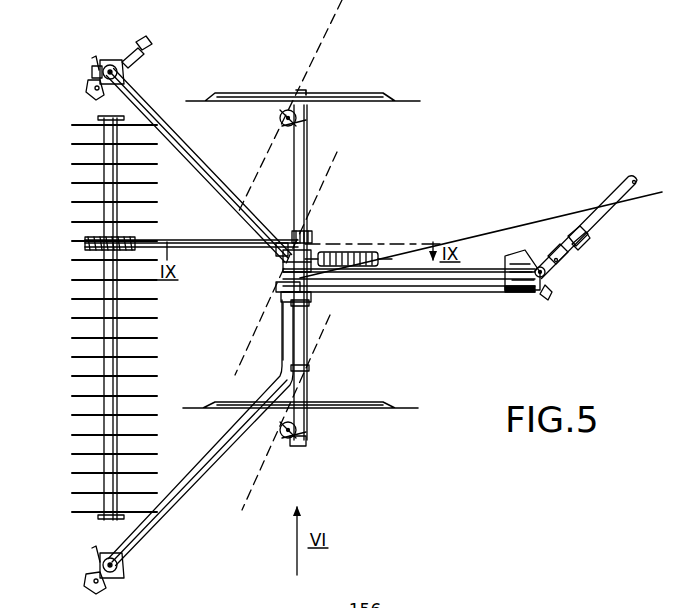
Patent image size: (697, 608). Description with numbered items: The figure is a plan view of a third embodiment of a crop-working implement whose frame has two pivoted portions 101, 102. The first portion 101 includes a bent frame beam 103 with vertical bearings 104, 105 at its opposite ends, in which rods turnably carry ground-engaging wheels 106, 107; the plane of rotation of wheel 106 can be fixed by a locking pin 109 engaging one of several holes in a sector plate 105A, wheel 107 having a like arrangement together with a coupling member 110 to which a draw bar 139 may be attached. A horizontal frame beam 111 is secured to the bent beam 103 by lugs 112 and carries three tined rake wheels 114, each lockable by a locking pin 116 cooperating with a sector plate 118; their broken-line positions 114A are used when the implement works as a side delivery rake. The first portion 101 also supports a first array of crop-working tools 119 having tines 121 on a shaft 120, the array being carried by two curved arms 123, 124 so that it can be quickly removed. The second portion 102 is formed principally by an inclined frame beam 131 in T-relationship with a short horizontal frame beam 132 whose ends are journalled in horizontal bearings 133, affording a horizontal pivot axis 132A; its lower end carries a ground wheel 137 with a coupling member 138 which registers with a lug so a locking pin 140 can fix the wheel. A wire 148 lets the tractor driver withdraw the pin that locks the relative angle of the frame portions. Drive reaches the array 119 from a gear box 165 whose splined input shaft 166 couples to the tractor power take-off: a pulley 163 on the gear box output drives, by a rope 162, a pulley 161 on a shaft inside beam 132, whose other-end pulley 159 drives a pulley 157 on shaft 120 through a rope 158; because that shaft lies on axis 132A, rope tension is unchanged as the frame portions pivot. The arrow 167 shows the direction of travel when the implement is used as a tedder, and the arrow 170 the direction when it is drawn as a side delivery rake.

The frame portion 101 is at (204, 152).
The frame portion 102 is at (483, 252).
The bent frame beam 103 is at (170, 502).
The vertical bearing 104 is at (122, 562).
The vertical bearing 105 is at (122, 75).
The sector plate 105A is at (92, 72).
The ground-engaging wheel 106 is at (98, 590).
The ground-engaging wheel 107 is at (88, 90).
The locking pin 109 is at (97, 60).
The coupling member 110 is at (134, 56).
The horizontal frame beam 111 is at (300, 333).
The lugs 112 is at (308, 304).
The rake wheel 114 is at (372, 101).
The rake wheel positions 114A is at (333, 12).
The locking pin 116 is at (290, 444).
The sector plate 118 is at (284, 122).
The first array of crop-working tools 119 is at (96, 352).
The shaft 120 is at (108, 310).
The tines 121 is at (80, 276).
The curved arm 123 is at (106, 530).
The curved arm 124 is at (103, 105).
The inclined frame beam 131 is at (418, 282).
The horizontal frame beam 132 is at (280, 272).
The horizontal axis 132A is at (290, 326).
The horizontal bearing 133 is at (282, 240).
The ground-engaging wheel 137 is at (532, 296).
The coupling member 138 is at (572, 252).
The draw bar 139 is at (596, 228).
The locking pin 140 is at (552, 293).
The wire 148 is at (520, 225).
The pulley 157 is at (90, 238).
The rope 158 is at (215, 240).
The pulley 159 is at (306, 232).
The pulley 161 is at (276, 300).
The rope 162 is at (448, 294).
The pulley 163 is at (508, 293).
The gear box 165 is at (497, 240).
The splined shaft 166 is at (545, 244).
The direction of travel 167 is at (602, 178).
The direction of travel 170 is at (65, 18).